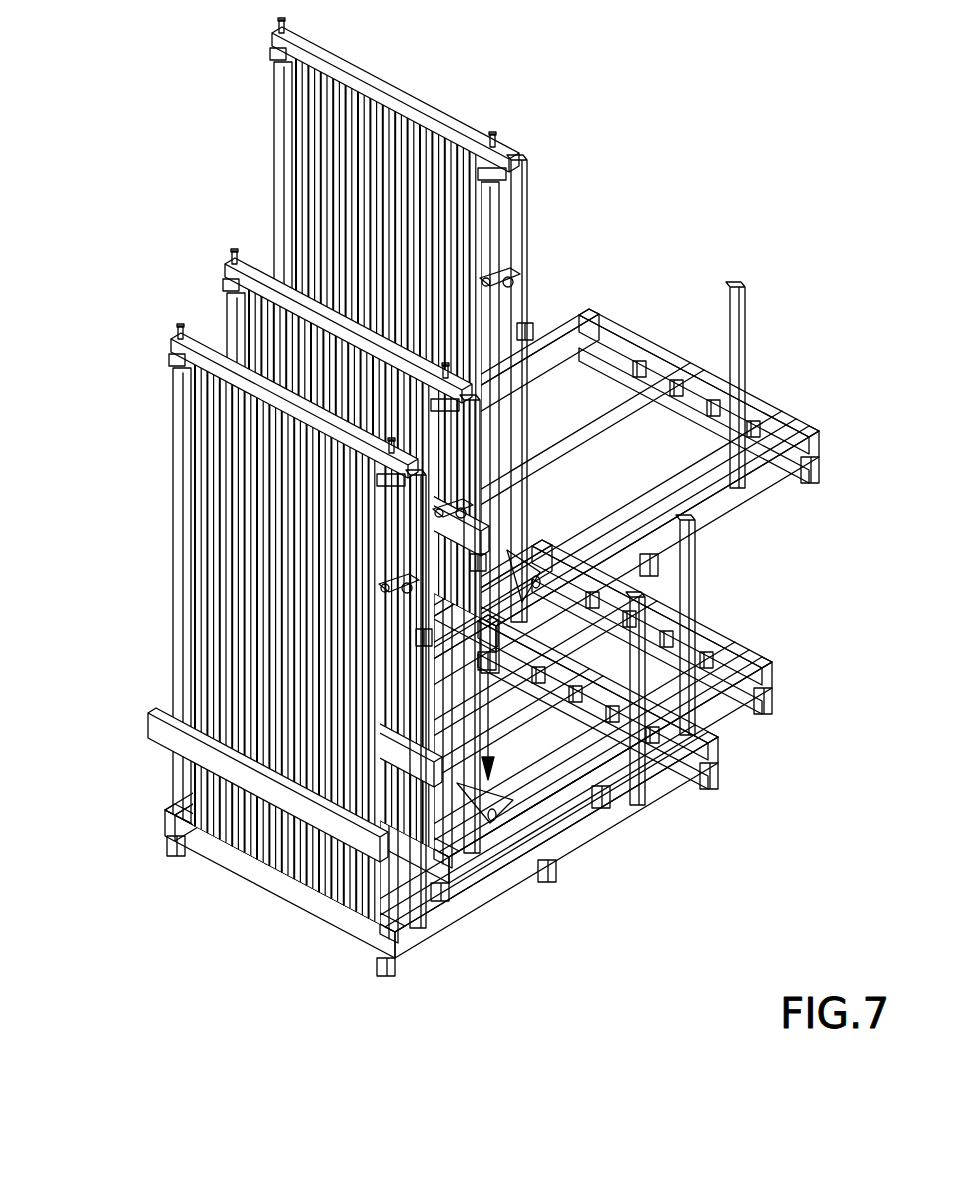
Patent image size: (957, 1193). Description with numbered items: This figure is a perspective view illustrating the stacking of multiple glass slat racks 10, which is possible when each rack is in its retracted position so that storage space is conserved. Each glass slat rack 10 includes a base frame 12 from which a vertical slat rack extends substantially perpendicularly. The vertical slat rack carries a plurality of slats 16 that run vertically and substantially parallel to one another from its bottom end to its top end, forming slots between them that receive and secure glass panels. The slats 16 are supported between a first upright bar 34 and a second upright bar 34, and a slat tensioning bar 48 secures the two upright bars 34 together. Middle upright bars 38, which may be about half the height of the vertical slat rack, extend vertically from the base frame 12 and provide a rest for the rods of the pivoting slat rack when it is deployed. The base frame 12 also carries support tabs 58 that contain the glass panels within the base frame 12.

The glass slat rack 10 is at (434, 497).
The base frame 12 is at (712, 500).
The slats 16 is at (200, 605).
The upright bar 34 is at (278, 132).
The middle upright bar 38 is at (525, 167).
The slat tensioning bar 48 is at (452, 137).
The support tab 58 is at (525, 836).